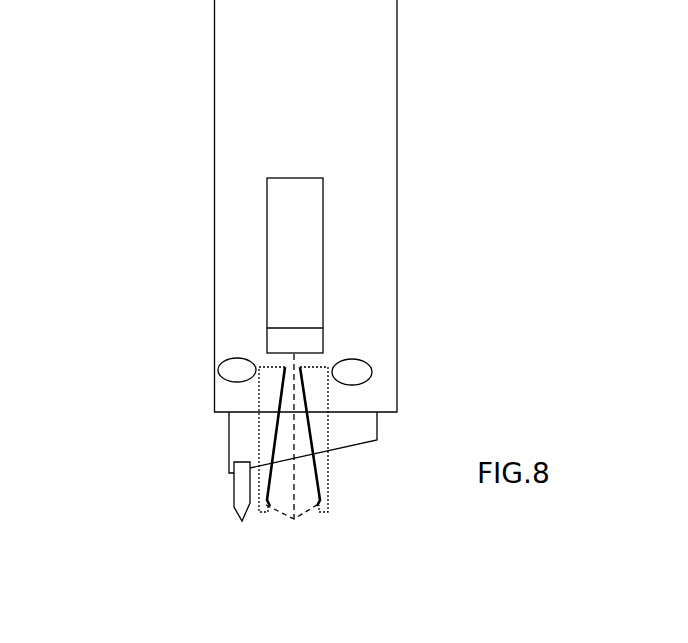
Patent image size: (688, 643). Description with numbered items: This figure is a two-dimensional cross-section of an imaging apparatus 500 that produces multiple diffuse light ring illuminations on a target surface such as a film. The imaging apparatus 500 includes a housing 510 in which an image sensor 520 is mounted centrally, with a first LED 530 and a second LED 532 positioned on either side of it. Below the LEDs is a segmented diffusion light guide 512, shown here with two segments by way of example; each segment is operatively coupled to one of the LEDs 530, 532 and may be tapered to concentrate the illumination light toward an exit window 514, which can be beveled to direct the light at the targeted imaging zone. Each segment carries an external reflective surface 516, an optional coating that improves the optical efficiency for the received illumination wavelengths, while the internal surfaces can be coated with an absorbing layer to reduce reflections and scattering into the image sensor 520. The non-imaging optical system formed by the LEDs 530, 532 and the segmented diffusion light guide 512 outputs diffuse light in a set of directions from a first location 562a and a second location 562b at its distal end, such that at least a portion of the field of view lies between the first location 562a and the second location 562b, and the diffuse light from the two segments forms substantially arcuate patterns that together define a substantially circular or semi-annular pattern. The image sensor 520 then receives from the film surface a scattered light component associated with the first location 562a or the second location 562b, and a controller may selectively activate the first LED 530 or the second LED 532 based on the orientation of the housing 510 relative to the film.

The imaging apparatus 500 is at (72, 29).
The housing 510 is at (214, 189).
The image sensor 520 is at (303, 206).
The first LED 530 is at (367, 368).
The second LED 532 is at (236, 372).
The segmented diffusion light guide 512 is at (272, 393).
The external reflective surface 516 is at (259, 425).
The exit window 514 is at (283, 523).
The first location of the distal end portion of the non-imaging optical system 562a is at (260, 503).
The second location of the distal end portion of the non-imaging optical system 562b is at (329, 507).